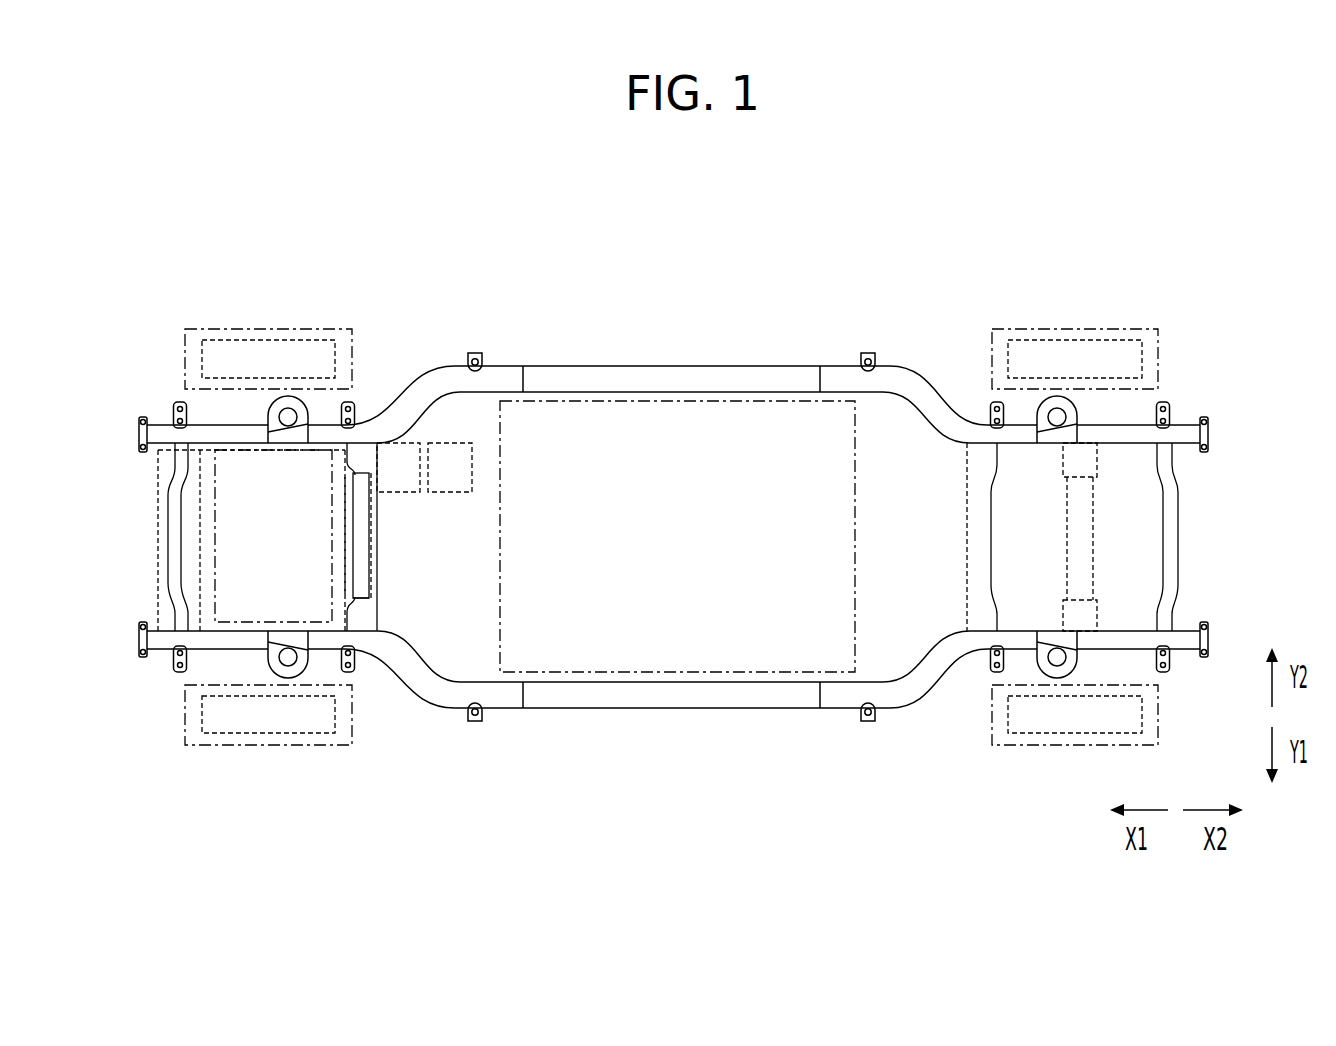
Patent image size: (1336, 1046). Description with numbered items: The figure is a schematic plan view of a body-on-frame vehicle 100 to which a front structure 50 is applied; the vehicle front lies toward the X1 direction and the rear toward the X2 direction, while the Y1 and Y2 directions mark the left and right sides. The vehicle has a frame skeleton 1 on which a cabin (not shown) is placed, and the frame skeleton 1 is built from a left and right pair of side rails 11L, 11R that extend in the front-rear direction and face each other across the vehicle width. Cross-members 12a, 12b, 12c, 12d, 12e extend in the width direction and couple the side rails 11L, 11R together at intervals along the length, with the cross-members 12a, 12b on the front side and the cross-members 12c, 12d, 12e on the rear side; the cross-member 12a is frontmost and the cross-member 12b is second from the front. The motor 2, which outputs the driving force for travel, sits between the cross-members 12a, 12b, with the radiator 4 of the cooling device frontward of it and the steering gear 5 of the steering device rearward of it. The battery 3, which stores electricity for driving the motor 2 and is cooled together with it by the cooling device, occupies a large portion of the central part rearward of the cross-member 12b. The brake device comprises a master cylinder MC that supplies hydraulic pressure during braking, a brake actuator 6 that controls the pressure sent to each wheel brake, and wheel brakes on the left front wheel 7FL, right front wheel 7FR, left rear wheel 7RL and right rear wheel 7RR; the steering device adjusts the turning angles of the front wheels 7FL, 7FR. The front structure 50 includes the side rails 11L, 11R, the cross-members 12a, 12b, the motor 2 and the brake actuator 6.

The body-on-frame vehicle 100 is at (816, 250).
The front structure 50 is at (421, 325).
The frame skeleton 1 is at (712, 365).
The side rail 11R is at (552, 383).
The side rail 11L is at (552, 695).
The motor 2 is at (208, 478).
The battery 3 is at (857, 502).
The radiator 4 is at (160, 534).
The steering gear 5 is at (368, 600).
The brake actuator 6 is at (395, 492).
The master cylinder MC is at (447, 492).
The right front wheel 7FR is at (272, 325).
The right rear wheel 7RR is at (1025, 328).
The left front wheel 7FL is at (270, 745).
The left rear wheel 7RL is at (1025, 745).
The cross-member 12a is at (170, 558).
The cross-member 12b is at (362, 567).
The cross-member 12c is at (978, 557).
The cross-member 12d is at (1078, 530).
The cross-member 12e is at (1173, 542).